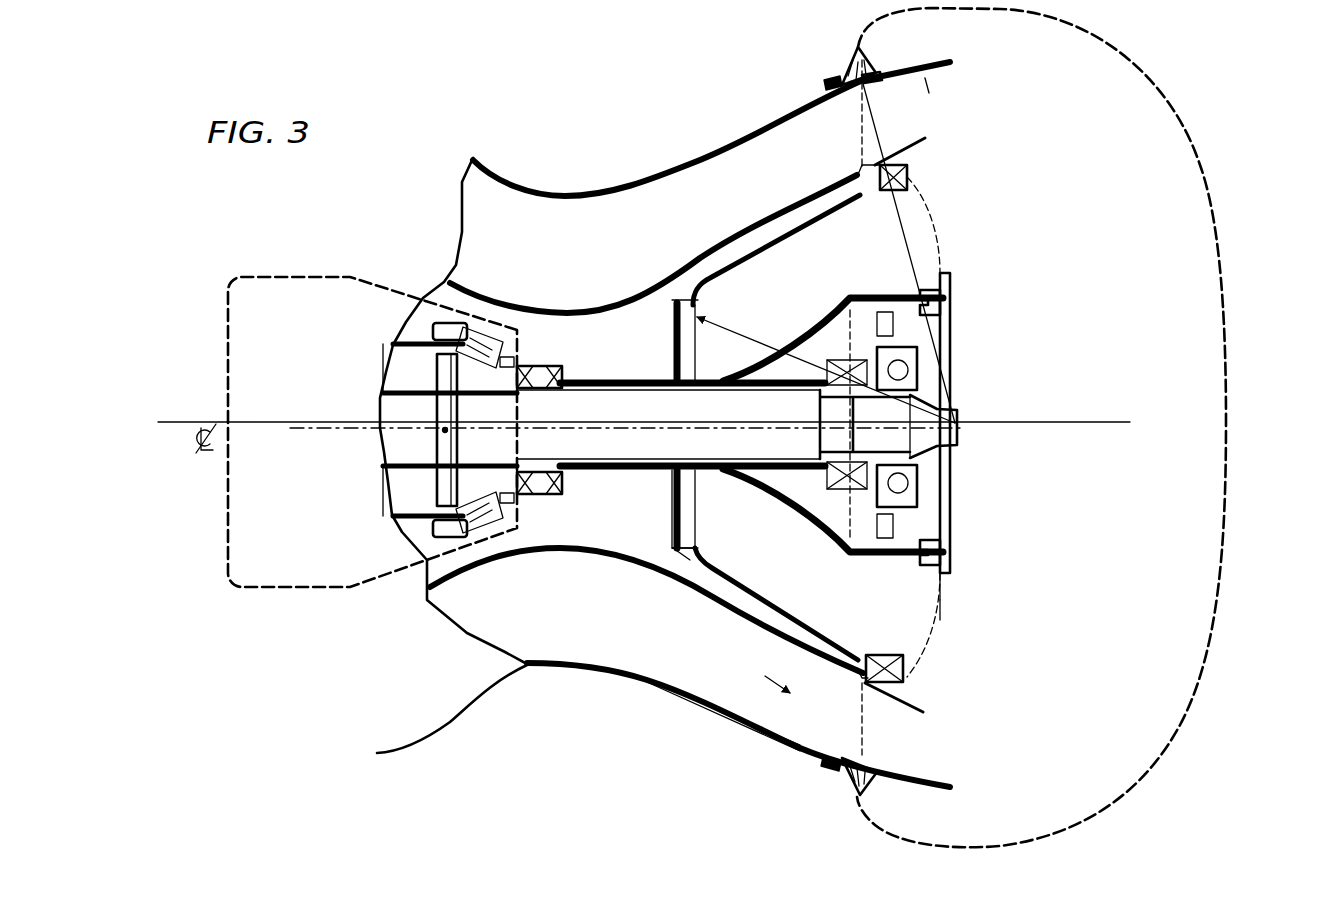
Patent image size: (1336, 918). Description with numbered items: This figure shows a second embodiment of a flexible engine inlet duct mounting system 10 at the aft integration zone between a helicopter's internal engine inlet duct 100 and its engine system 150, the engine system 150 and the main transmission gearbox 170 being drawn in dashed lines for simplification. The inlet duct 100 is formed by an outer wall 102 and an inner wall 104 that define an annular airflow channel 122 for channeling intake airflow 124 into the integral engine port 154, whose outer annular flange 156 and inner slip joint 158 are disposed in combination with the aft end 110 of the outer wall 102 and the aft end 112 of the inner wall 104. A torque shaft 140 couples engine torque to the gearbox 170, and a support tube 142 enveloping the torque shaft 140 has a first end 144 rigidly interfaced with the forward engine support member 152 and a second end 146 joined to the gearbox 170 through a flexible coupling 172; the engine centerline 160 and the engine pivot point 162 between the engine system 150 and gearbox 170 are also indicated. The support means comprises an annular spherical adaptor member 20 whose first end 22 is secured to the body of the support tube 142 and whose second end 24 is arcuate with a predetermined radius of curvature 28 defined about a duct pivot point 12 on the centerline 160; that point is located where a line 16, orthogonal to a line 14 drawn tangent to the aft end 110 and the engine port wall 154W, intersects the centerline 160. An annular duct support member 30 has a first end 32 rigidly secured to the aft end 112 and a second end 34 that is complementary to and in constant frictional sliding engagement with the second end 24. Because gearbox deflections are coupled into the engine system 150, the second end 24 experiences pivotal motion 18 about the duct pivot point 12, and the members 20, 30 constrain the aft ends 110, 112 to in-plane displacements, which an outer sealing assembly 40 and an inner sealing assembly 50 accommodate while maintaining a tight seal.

The flexible engine inlet duct mounting system 10 is at (950, 640).
The duct pivot point 12 is at (958, 414).
The tangent line 14 is at (851, 100).
The orthogonal line 16 is at (900, 232).
The pivotal motion 18 is at (250, 420).
The annular spherical adaptor member 20 is at (702, 507).
The first end of adaptor member 22 is at (672, 483).
The second end of adaptor member 24 is at (698, 537).
The radius of curvature 28 is at (736, 330).
The annular duct support member 30 is at (812, 612).
The first end of duct support member 32 is at (882, 655).
The second end of duct support member 34 is at (682, 546).
The outer sealing assembly 40 is at (840, 783).
The inner sealing assembly 50 is at (908, 660).
The engine inlet duct 100 is at (640, 170).
The outer wall 102 is at (513, 190).
The inner wall 104 is at (607, 290).
The aft end of outer wall 110 is at (822, 108).
The aft end of inner wall 112 is at (909, 181).
The annular airflow channel 122 is at (727, 685).
The intake airflow 124 is at (771, 710).
The torque shaft 140 is at (586, 380).
The support tube 142 is at (625, 377).
The first end of support tube 144 is at (940, 263).
The second end of support tube 146 is at (560, 366).
The engine system 150 is at (1229, 299).
The forward engine support member 152 is at (950, 305).
The engine port 154 is at (912, 138).
The engine port wall 154W is at (910, 97).
The outer annular flange 156 is at (870, 76).
The inner slip joint 158 is at (905, 168).
The engine centerline 160 is at (323, 433).
The engine pivot point 162 is at (445, 430).
The main transmission gearbox 170 is at (227, 553).
The flexible coupling 172 is at (490, 325).